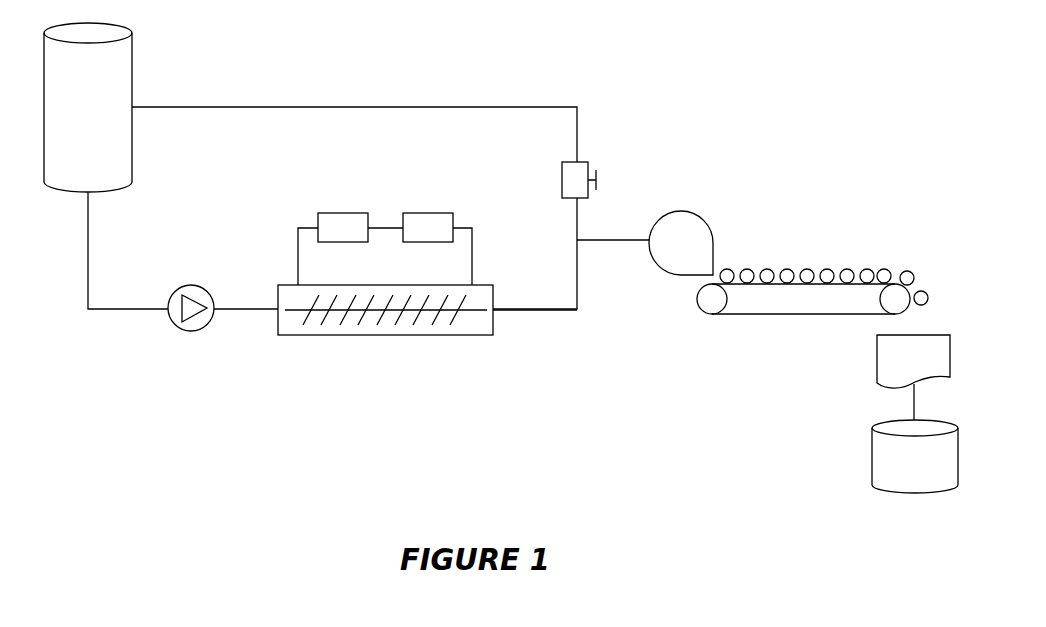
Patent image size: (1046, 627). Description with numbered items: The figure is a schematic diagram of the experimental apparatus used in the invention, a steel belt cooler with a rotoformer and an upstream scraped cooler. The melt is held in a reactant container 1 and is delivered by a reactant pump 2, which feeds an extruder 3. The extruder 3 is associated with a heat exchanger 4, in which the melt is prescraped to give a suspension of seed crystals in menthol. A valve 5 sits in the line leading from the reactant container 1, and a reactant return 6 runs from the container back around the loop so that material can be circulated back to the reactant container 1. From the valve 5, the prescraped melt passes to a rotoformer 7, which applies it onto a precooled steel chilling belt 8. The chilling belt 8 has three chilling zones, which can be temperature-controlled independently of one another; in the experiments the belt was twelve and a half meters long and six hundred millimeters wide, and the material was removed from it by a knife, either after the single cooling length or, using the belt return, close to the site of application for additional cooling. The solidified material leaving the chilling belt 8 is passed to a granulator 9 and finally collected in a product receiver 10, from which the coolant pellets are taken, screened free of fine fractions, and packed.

The reactant container 1 is at (106, 166).
The reactant pump 2 is at (198, 335).
The extruder 3 is at (413, 337).
The heat exchanger 4 is at (387, 198).
The valve 5 is at (562, 175).
The reactant return 6 is at (368, 107).
The rotoformer 7 is at (681, 243).
The chilling belt with three chilling zones T1, T2, T3 8 is at (806, 339).
The granulator 9 is at (913, 377).
The product receiver 10 is at (915, 456).